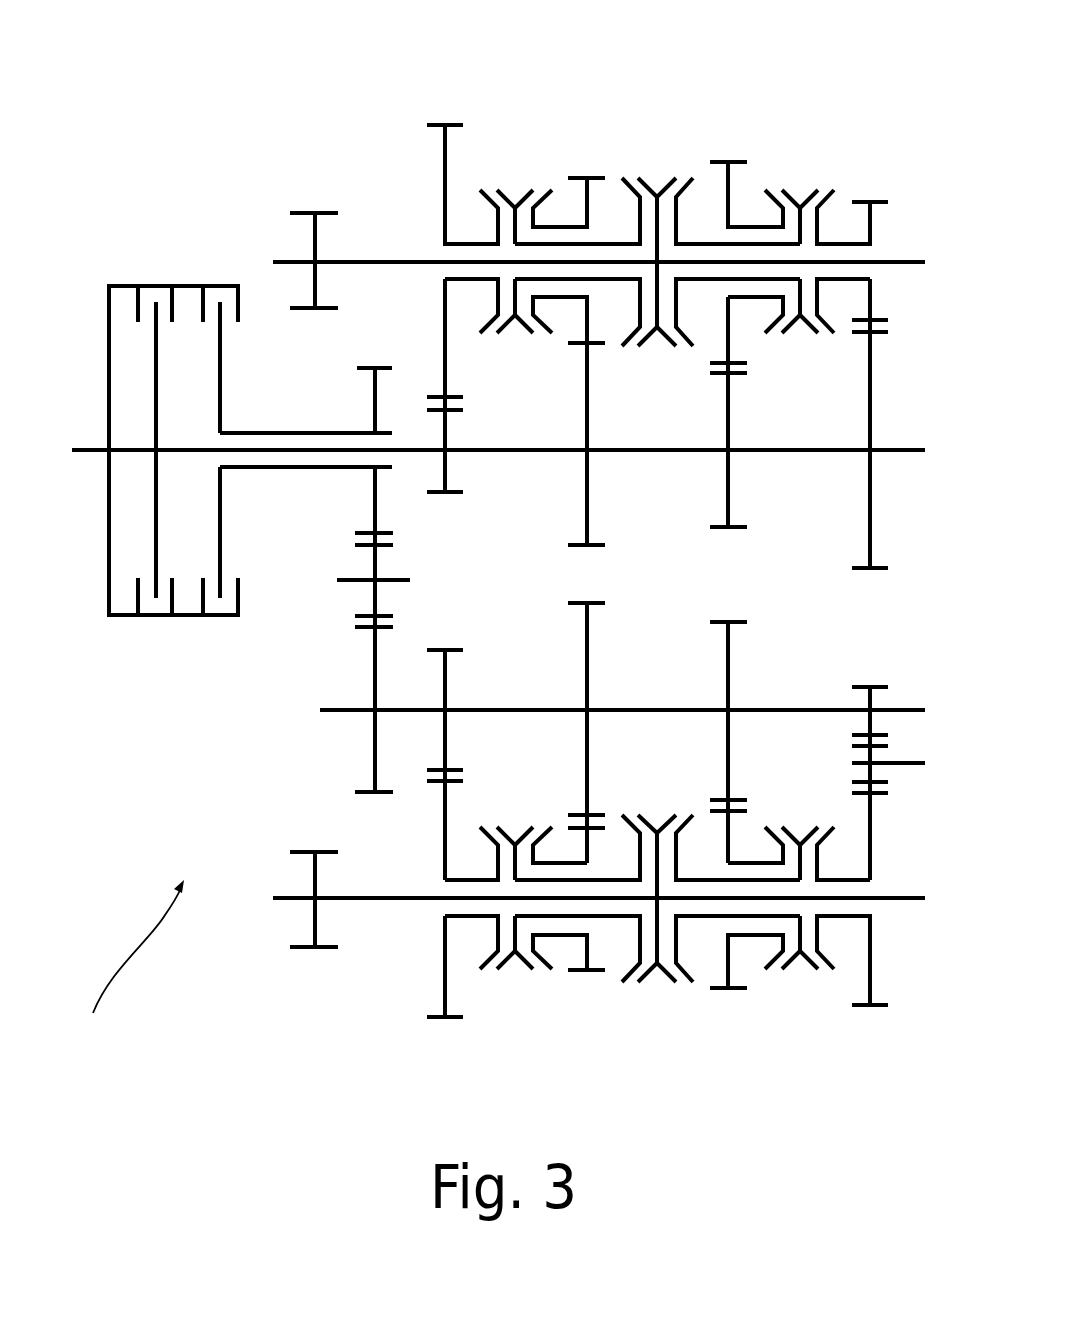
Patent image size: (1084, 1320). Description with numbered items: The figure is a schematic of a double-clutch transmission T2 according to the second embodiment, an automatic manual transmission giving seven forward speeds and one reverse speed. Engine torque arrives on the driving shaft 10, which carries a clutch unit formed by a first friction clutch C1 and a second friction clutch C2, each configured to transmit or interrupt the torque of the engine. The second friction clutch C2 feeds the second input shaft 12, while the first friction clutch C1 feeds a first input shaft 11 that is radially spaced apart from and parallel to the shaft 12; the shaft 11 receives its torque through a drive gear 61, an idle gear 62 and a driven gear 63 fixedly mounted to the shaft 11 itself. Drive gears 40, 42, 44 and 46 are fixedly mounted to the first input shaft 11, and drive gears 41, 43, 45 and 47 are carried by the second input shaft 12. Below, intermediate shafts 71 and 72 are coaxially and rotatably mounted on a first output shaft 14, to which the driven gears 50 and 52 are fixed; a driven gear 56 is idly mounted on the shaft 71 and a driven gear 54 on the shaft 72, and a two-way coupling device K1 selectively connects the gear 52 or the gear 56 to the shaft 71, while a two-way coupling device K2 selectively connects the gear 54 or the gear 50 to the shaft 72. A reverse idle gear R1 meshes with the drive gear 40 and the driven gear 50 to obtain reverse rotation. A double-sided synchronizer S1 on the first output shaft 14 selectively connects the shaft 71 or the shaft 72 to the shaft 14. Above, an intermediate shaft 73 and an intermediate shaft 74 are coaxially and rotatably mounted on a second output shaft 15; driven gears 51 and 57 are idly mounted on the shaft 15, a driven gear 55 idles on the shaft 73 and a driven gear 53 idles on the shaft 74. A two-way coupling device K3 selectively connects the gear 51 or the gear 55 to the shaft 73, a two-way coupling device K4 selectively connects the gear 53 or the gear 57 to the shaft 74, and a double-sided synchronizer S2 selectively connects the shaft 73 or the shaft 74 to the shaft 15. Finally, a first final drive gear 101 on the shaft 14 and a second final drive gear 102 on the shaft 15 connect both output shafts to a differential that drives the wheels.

The driving shaft 10 is at (83, 447).
The first input shaft 11 is at (320, 710).
The second input shaft 12 is at (907, 448).
The first output shaft 14 is at (368, 902).
The second output shaft 15 is at (368, 260).
The drive gear 40 is at (860, 683).
The drive gear 41 is at (453, 493).
The drive gear 42 is at (453, 650).
The drive gear 43 is at (740, 528).
The drive gear 44 is at (718, 621).
The drive gear 45 is at (600, 547).
The drive gear 46 is at (572, 605).
The drive gear 47 is at (858, 573).
The driven gear 50 is at (882, 1008).
The driven gear 51 is at (436, 124).
The driven gear 52 is at (455, 1018).
The driven gear 53 is at (740, 162).
The driven gear 54 is at (740, 990).
The driven gear 55 is at (575, 178).
The driven gear 56 is at (595, 972).
The driven gear 57 is at (883, 200).
The drive gear 61 is at (362, 370).
The idle gear 62 is at (360, 613).
The driven gear 63 is at (362, 792).
The intermediate shaft 71 is at (593, 881).
The intermediate shaft 72 is at (722, 881).
The intermediate shaft 73 is at (605, 280).
The intermediate shaft 74 is at (712, 280).
The first final drive gear 101 is at (298, 948).
The second final drive gear 102 is at (335, 212).
The first friction clutch C1 is at (227, 293).
The second friction clutch C2 is at (162, 293).
The two-way coupling device K1 is at (516, 975).
The two-way coupling device K2 is at (800, 975).
The two-way coupling device K3 is at (516, 188).
The two-way coupling device K4 is at (800, 188).
The first synchronization and engagement device S1 is at (657, 988).
The second synchronization and engagement device S2 is at (657, 174).
The reverse idle gear R1 is at (888, 780).
The double-clutch transmission T2 is at (125, 964).